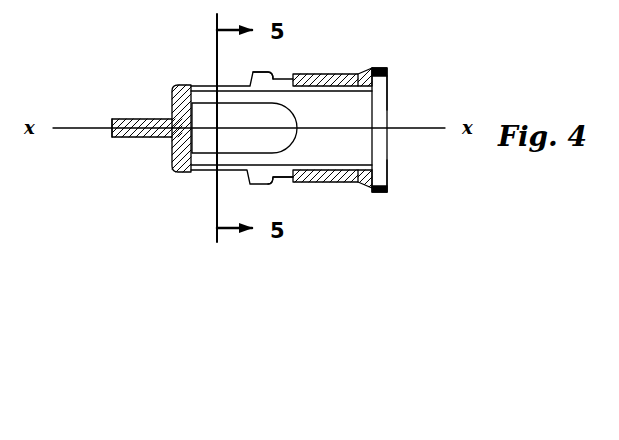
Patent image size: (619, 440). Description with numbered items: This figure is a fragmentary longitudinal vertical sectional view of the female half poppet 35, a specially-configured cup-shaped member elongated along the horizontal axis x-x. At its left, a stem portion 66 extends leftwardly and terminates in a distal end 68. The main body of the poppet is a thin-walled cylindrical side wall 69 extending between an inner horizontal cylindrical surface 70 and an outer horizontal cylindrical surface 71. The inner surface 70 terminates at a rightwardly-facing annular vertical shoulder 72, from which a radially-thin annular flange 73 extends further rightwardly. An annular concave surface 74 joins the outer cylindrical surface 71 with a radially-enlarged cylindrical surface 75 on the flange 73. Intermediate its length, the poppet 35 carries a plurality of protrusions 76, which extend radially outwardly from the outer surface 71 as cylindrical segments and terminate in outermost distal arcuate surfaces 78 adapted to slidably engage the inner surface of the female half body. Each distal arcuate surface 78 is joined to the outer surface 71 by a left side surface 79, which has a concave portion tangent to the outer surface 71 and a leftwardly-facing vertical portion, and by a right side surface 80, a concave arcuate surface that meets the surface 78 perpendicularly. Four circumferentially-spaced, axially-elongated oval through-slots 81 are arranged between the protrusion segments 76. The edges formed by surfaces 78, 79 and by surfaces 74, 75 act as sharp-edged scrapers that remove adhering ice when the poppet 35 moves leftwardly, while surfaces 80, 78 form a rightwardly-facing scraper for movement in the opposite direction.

The female half poppet 35 is at (438, 110).
The stem portion 66 is at (118, 109).
The distal end 68 is at (74, 147).
The thin-walled cylindrical side wall 69 is at (317, 67).
The inner horizontal cylindrical surface 70 is at (281, 128).
The outer horizontal cylindrical surface 71 is at (375, 59).
The annular vertical shoulder 72 is at (420, 95).
The annular flange 73 is at (421, 194).
The annular concave surface 74 is at (325, 207).
The radially-enlarged cylindrical surface 75 is at (408, 216).
The protrusions 76 is at (242, 197).
The distal arcuate surface 78 is at (316, 45).
The left side surface 79 is at (230, 66).
The right side surface 80 is at (306, 197).
The through-slots 81 is at (212, 134).